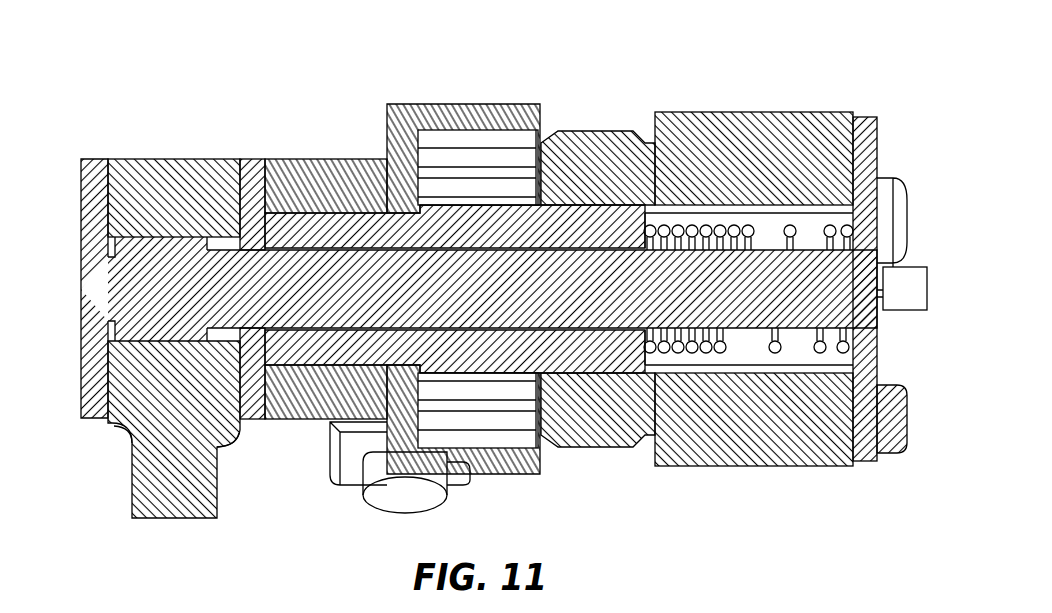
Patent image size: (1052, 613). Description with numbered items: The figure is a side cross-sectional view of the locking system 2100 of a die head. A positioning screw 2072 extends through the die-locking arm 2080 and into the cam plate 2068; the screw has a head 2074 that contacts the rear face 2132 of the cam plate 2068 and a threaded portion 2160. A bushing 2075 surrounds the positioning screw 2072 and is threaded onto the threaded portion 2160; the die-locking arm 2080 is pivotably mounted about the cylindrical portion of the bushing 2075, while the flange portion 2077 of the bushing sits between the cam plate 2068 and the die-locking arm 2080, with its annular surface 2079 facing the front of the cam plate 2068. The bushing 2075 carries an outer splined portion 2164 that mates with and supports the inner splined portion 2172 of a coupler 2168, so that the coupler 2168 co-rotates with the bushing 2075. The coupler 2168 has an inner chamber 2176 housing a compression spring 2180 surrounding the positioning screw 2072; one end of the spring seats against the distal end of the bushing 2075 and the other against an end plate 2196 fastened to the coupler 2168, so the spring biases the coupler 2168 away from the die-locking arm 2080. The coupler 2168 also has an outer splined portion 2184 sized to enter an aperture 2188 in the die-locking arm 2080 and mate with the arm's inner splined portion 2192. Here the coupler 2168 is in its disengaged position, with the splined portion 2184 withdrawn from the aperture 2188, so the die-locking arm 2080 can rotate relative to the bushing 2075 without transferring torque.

The locking system 2100 is at (356, 52).
The rear face 2132 is at (108, 200).
The cam plate 2068 is at (174, 158).
The flange portion 2077 is at (255, 158).
The threaded portion 2160 is at (327, 253).
The inner splined portion 2192 is at (455, 172).
The die-locking arm 2080 is at (488, 105).
The bushing 2075 is at (573, 223).
The outer splined portion 2184 is at (605, 128).
The compression spring 2180 is at (722, 233).
The inner chamber 2176 is at (807, 227).
The head 2074 is at (93, 387).
The annular surface 2079 is at (228, 398).
The aperture 2188 is at (483, 437).
The outer splined portion 2164 is at (482, 373).
The inner splined portion 2172 is at (720, 373).
The coupler 2168 is at (785, 433).
The end plate 2196 is at (870, 420).
The positioning screw 2072 is at (900, 300).